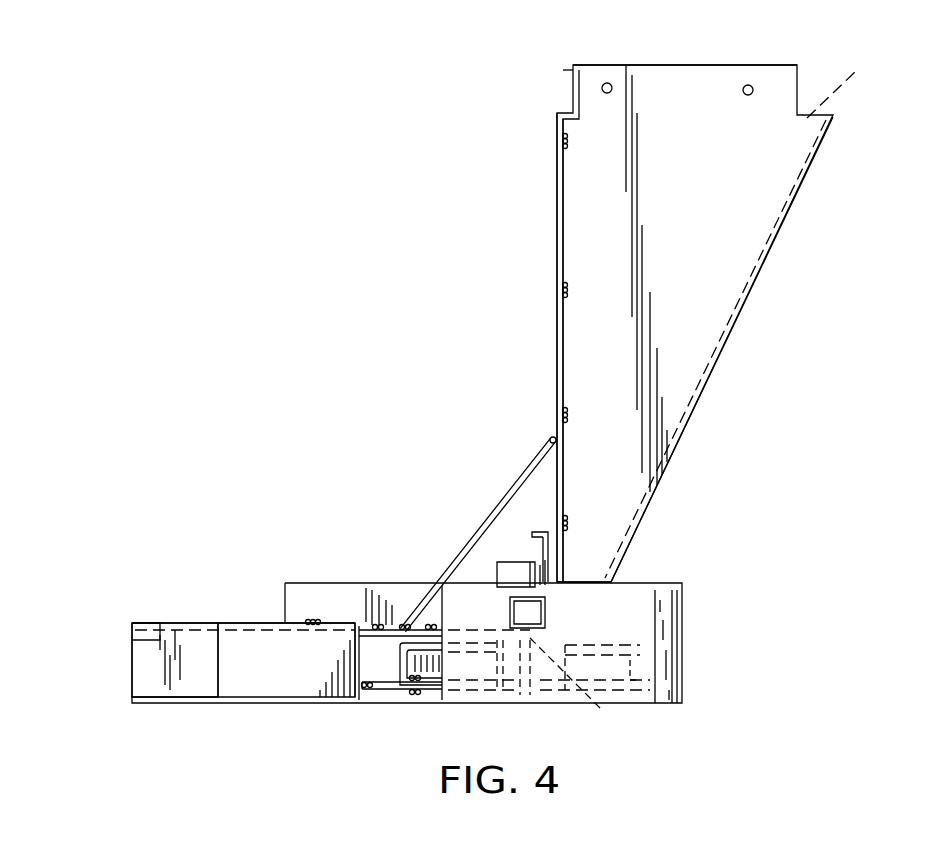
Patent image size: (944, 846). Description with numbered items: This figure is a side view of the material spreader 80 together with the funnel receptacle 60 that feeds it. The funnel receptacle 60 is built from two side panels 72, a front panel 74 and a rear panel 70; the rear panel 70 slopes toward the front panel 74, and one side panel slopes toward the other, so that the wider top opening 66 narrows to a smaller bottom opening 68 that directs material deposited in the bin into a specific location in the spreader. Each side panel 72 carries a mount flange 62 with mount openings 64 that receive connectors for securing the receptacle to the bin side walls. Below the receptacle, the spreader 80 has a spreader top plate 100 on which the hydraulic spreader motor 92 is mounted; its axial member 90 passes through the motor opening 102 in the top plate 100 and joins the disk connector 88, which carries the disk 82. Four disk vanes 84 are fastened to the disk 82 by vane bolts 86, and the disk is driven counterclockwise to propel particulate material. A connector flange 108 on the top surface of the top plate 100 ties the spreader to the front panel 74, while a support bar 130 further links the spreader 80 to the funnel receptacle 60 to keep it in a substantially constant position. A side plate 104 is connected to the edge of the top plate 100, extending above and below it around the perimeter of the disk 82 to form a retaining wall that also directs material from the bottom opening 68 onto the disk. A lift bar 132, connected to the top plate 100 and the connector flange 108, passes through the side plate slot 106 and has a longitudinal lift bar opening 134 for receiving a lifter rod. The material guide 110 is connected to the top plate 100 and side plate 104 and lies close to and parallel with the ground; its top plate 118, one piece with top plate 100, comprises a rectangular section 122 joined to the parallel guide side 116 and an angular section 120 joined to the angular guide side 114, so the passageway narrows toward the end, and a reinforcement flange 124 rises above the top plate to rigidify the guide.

The funnel receptacle 60 is at (743, 312).
The mount flange 62 is at (692, 69).
The mount openings 64 is at (608, 83).
The top opening 66 is at (845, 86).
The bottom opening 68 is at (612, 580).
The rear panel 70 is at (787, 212).
The side panels 72 is at (725, 255).
The front panel 74 is at (556, 213).
The material spreader 80 is at (351, 549).
The disk 82 is at (378, 686).
The disk vanes 84 is at (429, 676).
The vane bolts 86 is at (415, 690).
The disk connector 88 is at (523, 695).
The axial member 90 is at (507, 686).
The spreader motor 92 is at (513, 565).
The spreader top plate 100 is at (415, 625).
The motor opening 102 is at (584, 692).
The side plate 104 is at (684, 612).
The side plate slot 106 is at (518, 606).
The connector flange 108 is at (536, 530).
The material guide 110 is at (253, 619).
The angular guide side 114 is at (245, 692).
The parallel guide side 116 is at (150, 690).
The top plate 118 is at (196, 623).
The angular section 120 is at (273, 625).
The rectangular section 122 is at (152, 623).
The reinforcement flange 124 is at (308, 597).
The support bar 130 is at (530, 462).
The lift bar 132 is at (546, 604).
The lift bar opening 134 is at (530, 615).